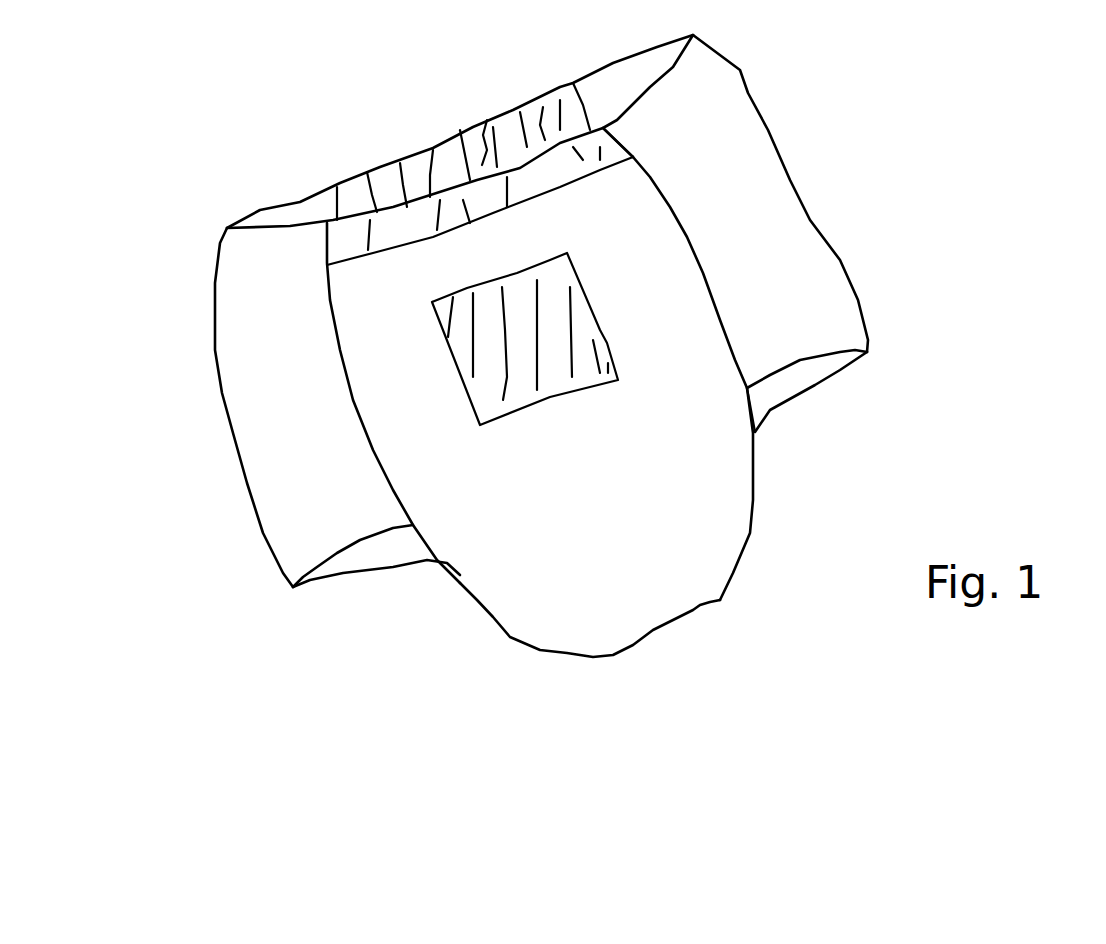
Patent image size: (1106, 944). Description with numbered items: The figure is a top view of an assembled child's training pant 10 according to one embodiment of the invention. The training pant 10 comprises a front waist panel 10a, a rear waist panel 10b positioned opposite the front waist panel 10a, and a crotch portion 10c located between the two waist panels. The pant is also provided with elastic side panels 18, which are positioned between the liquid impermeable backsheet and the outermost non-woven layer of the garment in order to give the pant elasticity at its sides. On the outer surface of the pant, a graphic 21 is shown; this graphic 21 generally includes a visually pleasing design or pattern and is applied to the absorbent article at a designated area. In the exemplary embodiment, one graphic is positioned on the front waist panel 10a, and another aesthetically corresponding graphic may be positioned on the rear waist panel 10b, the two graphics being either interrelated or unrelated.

The training pant 10 is at (852, 186).
The front waist panel 10a is at (427, 279).
The rear waist panel 10b is at (584, 230).
The crotch portion 10c is at (622, 602).
The elastic side panels 18 is at (757, 157).
The graphic 21 is at (587, 338).